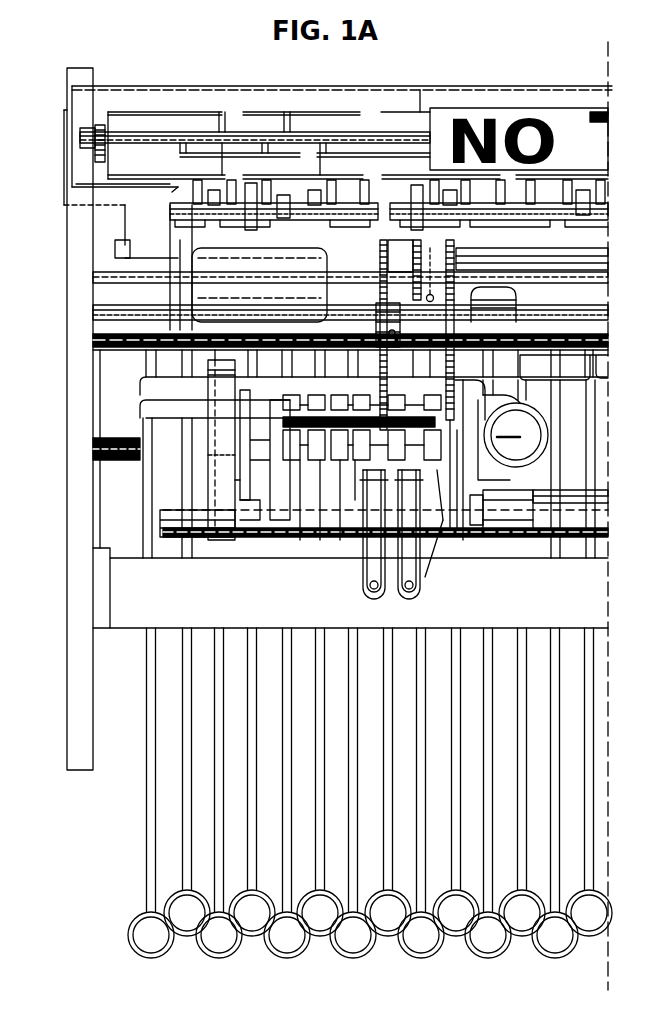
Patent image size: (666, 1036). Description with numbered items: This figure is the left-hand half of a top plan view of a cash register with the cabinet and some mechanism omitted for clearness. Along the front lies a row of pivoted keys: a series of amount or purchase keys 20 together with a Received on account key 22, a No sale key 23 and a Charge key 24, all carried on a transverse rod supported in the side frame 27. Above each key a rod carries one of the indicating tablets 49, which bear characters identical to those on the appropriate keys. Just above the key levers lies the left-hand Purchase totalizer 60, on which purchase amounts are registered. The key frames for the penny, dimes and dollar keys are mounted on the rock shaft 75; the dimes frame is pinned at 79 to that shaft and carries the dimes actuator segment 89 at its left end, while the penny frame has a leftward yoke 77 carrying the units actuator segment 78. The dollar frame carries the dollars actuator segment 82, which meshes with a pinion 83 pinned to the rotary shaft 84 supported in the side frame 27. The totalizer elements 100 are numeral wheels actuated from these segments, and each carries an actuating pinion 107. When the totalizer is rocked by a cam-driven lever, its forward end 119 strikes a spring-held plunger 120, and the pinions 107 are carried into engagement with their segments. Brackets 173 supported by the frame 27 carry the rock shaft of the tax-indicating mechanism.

The amount or purchase keys 20 is at (388, 821).
The Received on account key 22 is at (153, 958).
The No sale key 23 is at (285, 958).
The Charge key 24 is at (388, 937).
The side frame 27 is at (67, 749).
The indicating tablets 49 is at (342, 125).
The Purchase totalizer 60 is at (451, 540).
The rock shaft 75 is at (310, 292).
The yoke 77 is at (584, 355).
The actuator segment 78 is at (455, 258).
The pin 79 is at (436, 266).
The actuator segment 82 is at (380, 252).
The pinion 83 is at (376, 312).
The rotary shaft 84 is at (98, 345).
The actuator segment 89 is at (413, 256).
The totalizer elements 100 is at (362, 497).
The actuating pinion 107 is at (484, 437).
The forward end of lever 119 is at (468, 545).
The plunger 120 is at (493, 532).
The brackets 173 is at (95, 152).